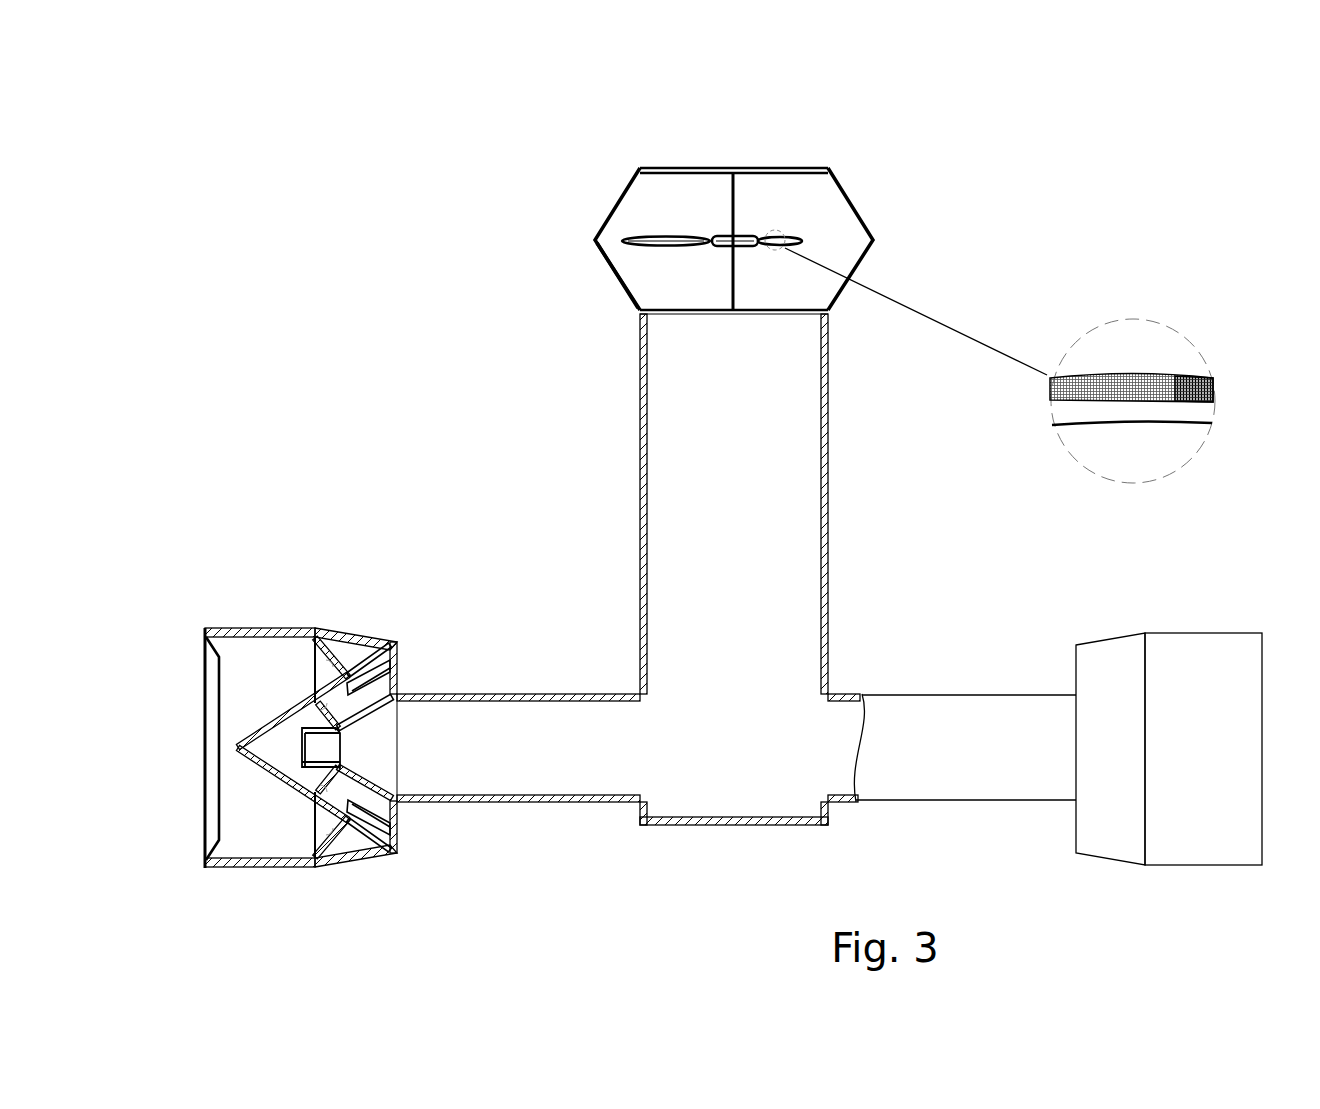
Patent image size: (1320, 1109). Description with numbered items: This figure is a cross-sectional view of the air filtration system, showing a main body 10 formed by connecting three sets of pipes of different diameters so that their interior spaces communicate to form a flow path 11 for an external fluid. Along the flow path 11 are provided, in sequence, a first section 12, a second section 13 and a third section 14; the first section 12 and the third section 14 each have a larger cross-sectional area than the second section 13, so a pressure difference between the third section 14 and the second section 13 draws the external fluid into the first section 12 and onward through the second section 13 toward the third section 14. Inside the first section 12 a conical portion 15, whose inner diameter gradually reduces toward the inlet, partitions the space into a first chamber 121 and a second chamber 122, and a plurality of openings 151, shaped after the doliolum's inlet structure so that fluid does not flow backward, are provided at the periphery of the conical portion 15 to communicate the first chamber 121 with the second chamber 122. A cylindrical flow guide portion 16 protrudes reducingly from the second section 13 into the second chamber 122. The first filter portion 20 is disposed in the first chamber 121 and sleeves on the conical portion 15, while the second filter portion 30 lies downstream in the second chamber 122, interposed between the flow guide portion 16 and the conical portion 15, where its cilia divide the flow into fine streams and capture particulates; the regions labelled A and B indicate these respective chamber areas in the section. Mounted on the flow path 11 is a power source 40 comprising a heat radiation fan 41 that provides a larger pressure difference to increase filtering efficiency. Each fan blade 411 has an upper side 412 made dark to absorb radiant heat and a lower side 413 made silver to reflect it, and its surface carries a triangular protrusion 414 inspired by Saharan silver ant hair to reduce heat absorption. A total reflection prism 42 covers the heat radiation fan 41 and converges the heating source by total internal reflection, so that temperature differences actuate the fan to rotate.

The main body 10 is at (587, 821).
The flow path 11 is at (475, 367).
The first section 12 is at (240, 652).
The first chamber 121 is at (273, 653).
The second chamber 122 is at (298, 790).
The second section 13 is at (517, 690).
The third section 14 is at (680, 430).
The conical portion 15 is at (318, 780).
The opening 151 is at (370, 687).
The flow guide portion 16 is at (367, 782).
The first filter portion 20 is at (330, 662).
The second filter portion 30 is at (300, 735).
The power source 40 is at (878, 210).
The heat radiation fan 41 is at (725, 236).
The fan blade 411 is at (627, 233).
The upper side 412 is at (1167, 377).
The lower side 413 is at (1118, 424).
The triangular protrusion 414 is at (662, 237).
The total reflection prism 42 is at (608, 284).
The upper air passage A is at (322, 665).
The lower air passage B is at (298, 745).